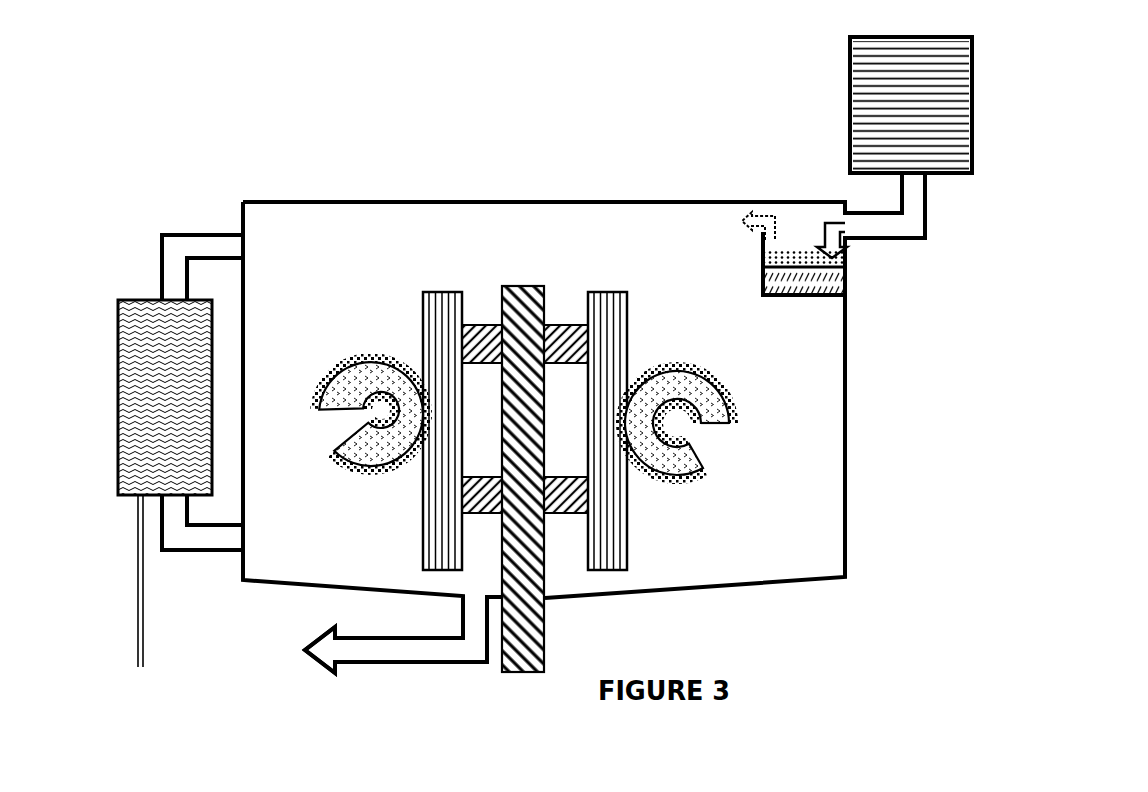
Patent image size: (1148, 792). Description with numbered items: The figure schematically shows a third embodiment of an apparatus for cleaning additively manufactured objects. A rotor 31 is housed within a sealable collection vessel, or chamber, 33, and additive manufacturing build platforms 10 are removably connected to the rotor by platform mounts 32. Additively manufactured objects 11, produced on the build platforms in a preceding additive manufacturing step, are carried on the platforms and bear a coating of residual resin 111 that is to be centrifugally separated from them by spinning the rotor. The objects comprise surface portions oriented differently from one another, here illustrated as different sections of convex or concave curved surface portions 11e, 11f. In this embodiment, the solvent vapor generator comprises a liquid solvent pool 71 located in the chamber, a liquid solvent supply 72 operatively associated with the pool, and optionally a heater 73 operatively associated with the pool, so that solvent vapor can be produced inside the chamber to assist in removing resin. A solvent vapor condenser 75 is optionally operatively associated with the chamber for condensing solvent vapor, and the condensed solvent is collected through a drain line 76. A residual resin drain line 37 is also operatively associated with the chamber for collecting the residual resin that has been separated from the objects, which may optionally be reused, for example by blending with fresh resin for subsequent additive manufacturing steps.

The additive manufacturing build platform 10 is at (525, 431).
The additively manufactured object 11 is at (531, 410).
The curved surface portion 11e is at (727, 400).
The curved surface portion 11f is at (690, 367).
The coating of residual resin 111 is at (362, 350).
The rotor 31 is at (513, 300).
The platform mount 32 is at (482, 327).
The sealable collection vessel or chamber 33 is at (317, 204).
The residual resin drain line 37 is at (372, 648).
The liquid solvent pool 71 is at (803, 242).
The liquid solvent supply 72 is at (860, 113).
The heater 73 is at (812, 280).
The solvent vapor condenser 75 is at (153, 347).
The drain line 76 is at (143, 635).